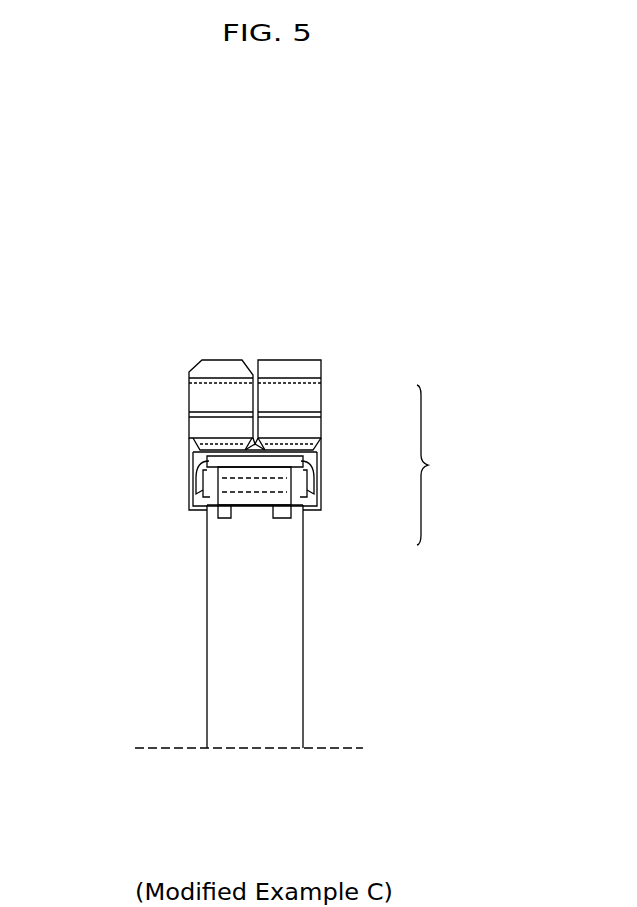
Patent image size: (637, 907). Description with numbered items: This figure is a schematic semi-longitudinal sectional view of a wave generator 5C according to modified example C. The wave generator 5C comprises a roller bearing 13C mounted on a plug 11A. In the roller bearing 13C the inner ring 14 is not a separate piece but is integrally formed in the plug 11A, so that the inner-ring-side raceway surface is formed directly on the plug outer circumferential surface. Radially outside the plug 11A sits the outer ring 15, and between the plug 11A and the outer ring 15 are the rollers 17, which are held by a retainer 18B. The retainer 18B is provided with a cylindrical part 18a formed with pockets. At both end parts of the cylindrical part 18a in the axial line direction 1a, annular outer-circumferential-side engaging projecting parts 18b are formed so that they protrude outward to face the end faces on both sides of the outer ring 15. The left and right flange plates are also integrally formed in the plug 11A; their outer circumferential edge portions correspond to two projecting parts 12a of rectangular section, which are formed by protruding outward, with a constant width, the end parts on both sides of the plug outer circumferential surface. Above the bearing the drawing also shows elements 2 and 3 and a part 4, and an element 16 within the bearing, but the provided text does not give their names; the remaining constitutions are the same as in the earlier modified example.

The block 2 is at (324, 370).
The block 3 is at (186, 370).
The holder frame 4 is at (180, 458).
The roller bearing 13C is at (447, 465).
The outer ring 15 is at (288, 436).
The element 16 is at (300, 463).
The rollers 17 is at (288, 486).
The retainer 18B is at (300, 477).
The annular outer-circumferential-side engaging projecting parts 18b is at (192, 471).
The cylindrical part 18a is at (200, 503).
The inner ring 14 is at (300, 495).
The projecting parts 12a is at (207, 510).
The plug 11A is at (265, 658).
The axial line direction 1a is at (337, 753).
The wave generator 5C is at (192, 621).